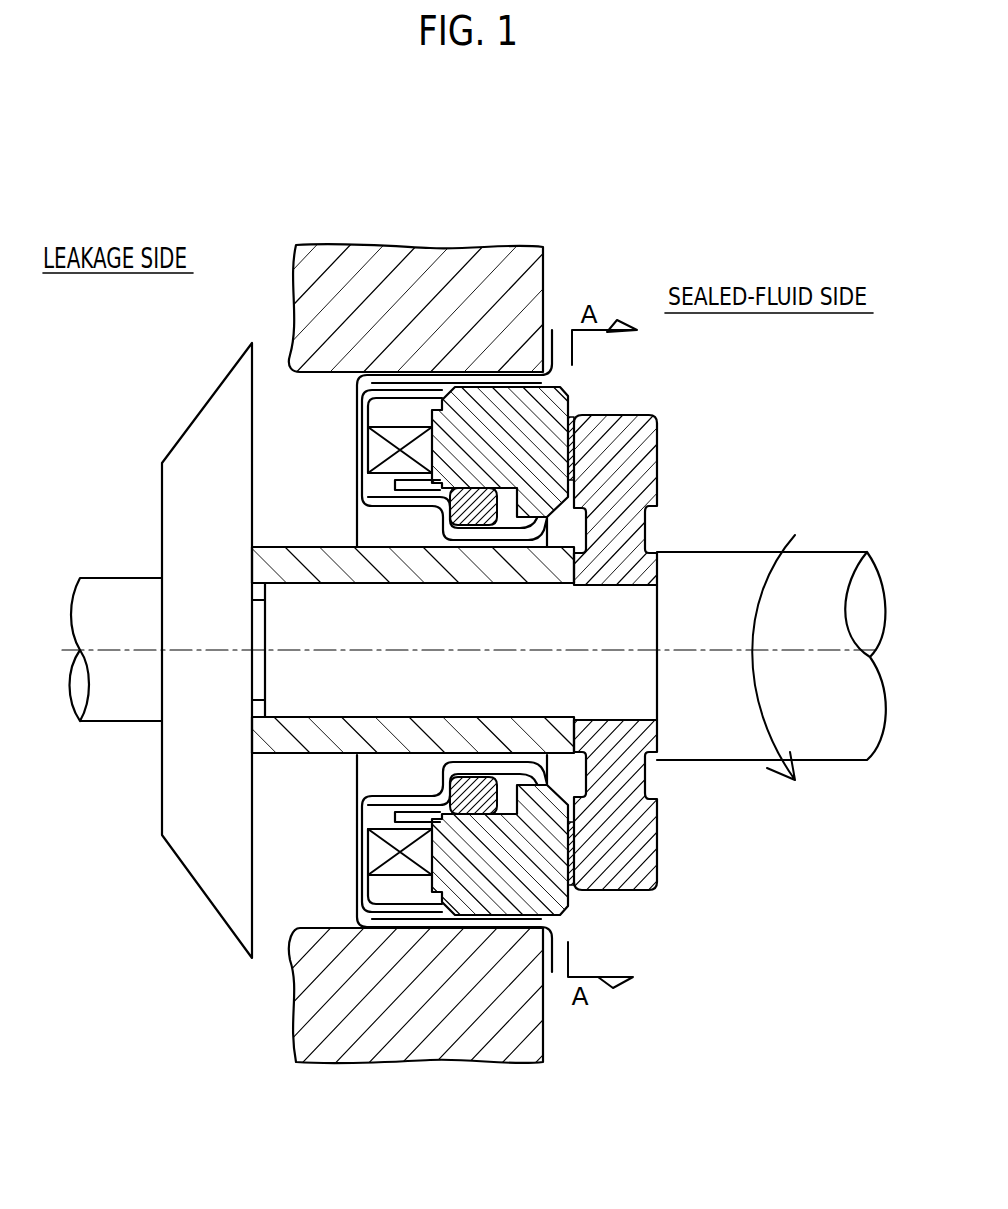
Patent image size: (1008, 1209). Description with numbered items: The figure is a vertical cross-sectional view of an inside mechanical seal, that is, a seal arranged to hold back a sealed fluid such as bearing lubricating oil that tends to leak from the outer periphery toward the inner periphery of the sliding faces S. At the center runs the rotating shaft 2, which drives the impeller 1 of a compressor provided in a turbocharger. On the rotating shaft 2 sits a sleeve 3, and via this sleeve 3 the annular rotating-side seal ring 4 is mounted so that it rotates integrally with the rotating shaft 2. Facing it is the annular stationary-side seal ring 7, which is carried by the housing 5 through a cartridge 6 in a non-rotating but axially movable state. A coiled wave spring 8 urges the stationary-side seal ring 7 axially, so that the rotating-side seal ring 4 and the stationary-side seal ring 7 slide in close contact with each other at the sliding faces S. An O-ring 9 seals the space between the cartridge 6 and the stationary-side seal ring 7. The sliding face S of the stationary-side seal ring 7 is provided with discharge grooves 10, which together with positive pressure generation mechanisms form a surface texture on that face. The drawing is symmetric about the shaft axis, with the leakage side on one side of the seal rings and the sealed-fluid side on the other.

The impeller 1 is at (197, 460).
The rotating shaft 2 is at (507, 639).
The sleeve 3 is at (280, 560).
The rotating-side seal ring 4 is at (652, 442).
The housing 5 is at (390, 272).
The cartridge 6 is at (358, 420).
The stationary-side seal ring 7 is at (558, 390).
The coiled wave spring 8 is at (407, 427).
The O-ring 9 is at (450, 514).
The discharge grooves 10 is at (560, 490).
The sliding faces S is at (522, 410).